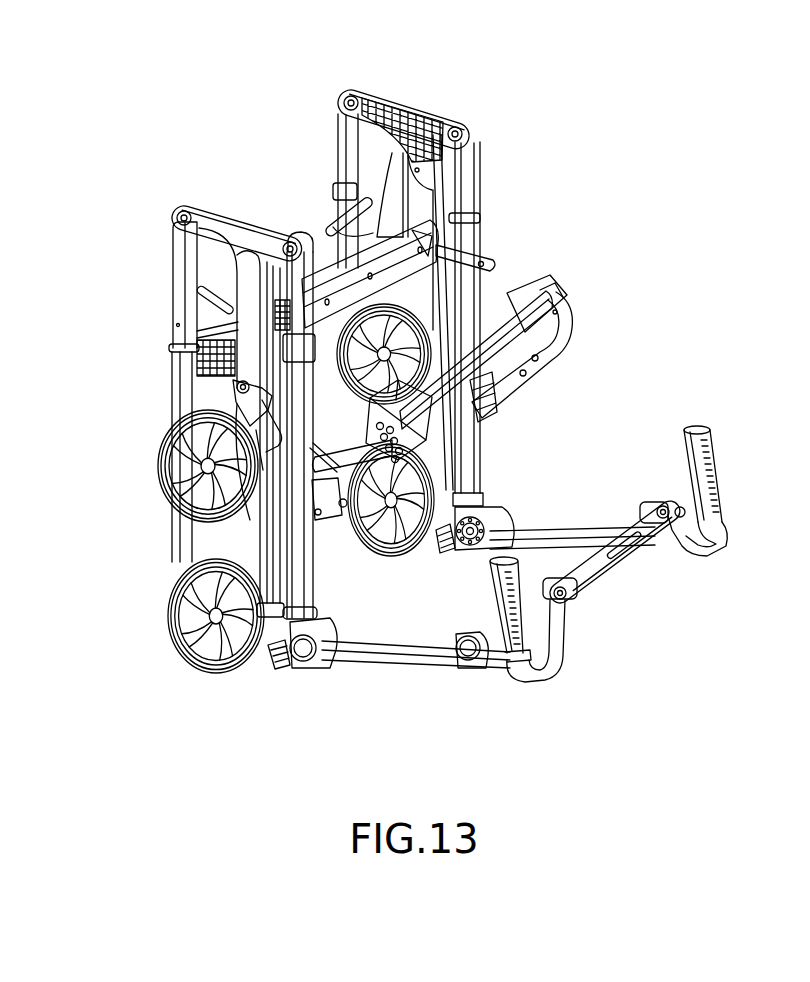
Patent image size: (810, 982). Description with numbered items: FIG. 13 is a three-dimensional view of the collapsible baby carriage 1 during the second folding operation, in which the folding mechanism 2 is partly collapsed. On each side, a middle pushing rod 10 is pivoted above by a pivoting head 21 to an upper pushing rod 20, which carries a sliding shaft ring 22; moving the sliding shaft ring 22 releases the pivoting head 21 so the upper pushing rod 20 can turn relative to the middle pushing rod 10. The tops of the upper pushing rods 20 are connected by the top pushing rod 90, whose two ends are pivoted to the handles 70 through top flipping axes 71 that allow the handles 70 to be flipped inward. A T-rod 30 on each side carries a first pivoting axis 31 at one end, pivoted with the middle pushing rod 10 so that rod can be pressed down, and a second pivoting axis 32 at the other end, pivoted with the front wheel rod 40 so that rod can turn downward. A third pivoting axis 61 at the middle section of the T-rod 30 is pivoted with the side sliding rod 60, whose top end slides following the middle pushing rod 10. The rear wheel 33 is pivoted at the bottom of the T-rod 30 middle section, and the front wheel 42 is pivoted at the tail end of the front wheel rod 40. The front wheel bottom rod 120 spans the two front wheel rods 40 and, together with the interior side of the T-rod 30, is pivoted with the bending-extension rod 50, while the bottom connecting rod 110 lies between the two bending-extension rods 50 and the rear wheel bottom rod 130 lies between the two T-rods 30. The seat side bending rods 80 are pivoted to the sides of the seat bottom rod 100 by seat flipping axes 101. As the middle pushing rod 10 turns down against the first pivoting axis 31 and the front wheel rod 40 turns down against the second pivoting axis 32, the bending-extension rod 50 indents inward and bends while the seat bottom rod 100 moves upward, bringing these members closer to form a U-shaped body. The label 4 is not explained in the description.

The baby carriage 1 is at (662, 357).
The folding mechanism 2 is at (452, 695).
The frame 4 is at (804, 486).
The middle pushing rod 10 is at (312, 563).
The upper pushing rod 20 is at (388, 658).
The pivoting head 21 is at (306, 652).
The sliding shaft ring 22 is at (482, 665).
The T-rod 30 is at (240, 220).
The first pivoting axis 31 is at (297, 233).
The second pivoting axis 32 is at (178, 215).
The rear wheel 33 is at (167, 607).
The front wheel rod 40 is at (177, 300).
The front wheel 42 is at (160, 490).
The bending-extension rod 50 is at (412, 133).
The side sliding rod 60 is at (263, 527).
The third pivoting axis 61 is at (243, 388).
The handle 70 is at (717, 472).
The top flipping axis 71 is at (565, 598).
The seat side bending rod 80 is at (555, 353).
The top pushing rod 90 is at (603, 577).
The seat bottom rod 100 is at (495, 350).
The seat flipping axis 101 is at (555, 285).
The bottom connecting rod 110 is at (423, 213).
The front wheel bottom rod 120 is at (412, 273).
The rear wheel bottom rod 130 is at (340, 520).